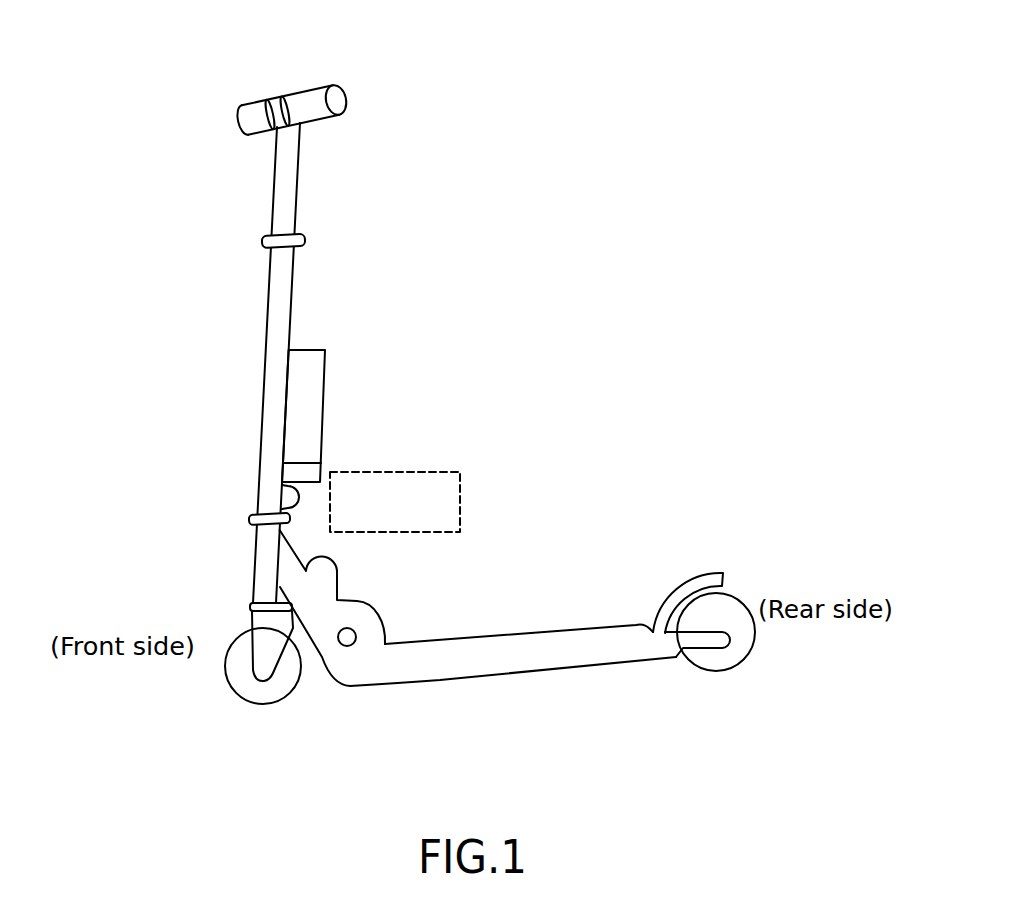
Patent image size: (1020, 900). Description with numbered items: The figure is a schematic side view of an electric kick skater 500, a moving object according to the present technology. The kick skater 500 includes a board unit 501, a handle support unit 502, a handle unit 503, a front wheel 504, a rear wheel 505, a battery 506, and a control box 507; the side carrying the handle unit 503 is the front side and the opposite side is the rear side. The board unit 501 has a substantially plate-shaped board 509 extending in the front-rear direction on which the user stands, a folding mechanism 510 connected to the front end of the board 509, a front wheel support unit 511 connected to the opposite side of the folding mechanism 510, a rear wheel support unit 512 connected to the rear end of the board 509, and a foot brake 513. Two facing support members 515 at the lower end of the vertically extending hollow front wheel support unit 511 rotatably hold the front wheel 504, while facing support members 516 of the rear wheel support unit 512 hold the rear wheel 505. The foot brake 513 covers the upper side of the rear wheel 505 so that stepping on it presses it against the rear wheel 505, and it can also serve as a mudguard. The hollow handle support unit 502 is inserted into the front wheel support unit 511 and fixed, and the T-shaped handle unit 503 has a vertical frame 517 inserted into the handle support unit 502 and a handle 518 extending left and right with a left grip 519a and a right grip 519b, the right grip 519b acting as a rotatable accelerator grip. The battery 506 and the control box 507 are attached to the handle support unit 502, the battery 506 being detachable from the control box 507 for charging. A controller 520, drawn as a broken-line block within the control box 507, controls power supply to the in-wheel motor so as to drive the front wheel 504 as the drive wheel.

The kick skater 500 is at (569, 84).
The board unit 501 is at (561, 618).
The handle support unit 502 is at (254, 418).
The handle unit 503 is at (249, 89).
The front wheel 504 is at (232, 690).
The rear wheel 505 is at (752, 662).
The battery 506 is at (325, 378).
The control box 507 is at (323, 470).
The board 509 is at (495, 648).
The folding mechanism 510 is at (373, 617).
The front wheel support unit 511 is at (257, 552).
The rear wheel support unit 512 is at (690, 698).
The foot brake 513 is at (700, 572).
The support member 515 is at (267, 673).
The support member 516 is at (680, 650).
The frame 517 is at (290, 190).
The handle 518 is at (287, 98).
The left grip 519a is at (350, 92).
The right grip 519b is at (240, 122).
The controller 520 is at (461, 473).